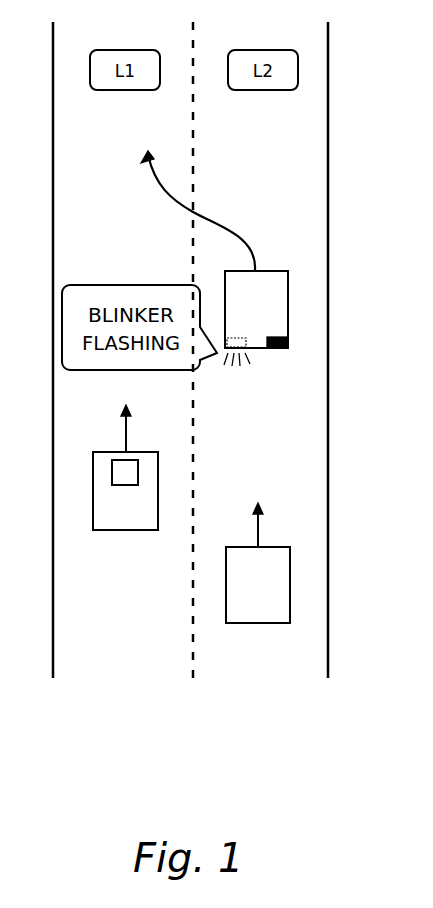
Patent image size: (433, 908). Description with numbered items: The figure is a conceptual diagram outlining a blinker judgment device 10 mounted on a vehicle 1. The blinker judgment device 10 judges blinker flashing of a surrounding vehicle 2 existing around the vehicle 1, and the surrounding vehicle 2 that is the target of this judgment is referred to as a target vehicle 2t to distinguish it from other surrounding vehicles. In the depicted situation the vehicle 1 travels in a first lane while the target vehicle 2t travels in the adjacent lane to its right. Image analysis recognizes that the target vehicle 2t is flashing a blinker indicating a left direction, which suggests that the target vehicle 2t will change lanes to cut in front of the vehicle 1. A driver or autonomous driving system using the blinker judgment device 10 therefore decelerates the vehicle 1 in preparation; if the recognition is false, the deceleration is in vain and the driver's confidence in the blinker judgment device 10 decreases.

The vehicle 1 is at (122, 532).
The surrounding vehicle 2 is at (257, 625).
The target vehicle 2t is at (267, 350).
The blinker judgment device 10 is at (112, 472).